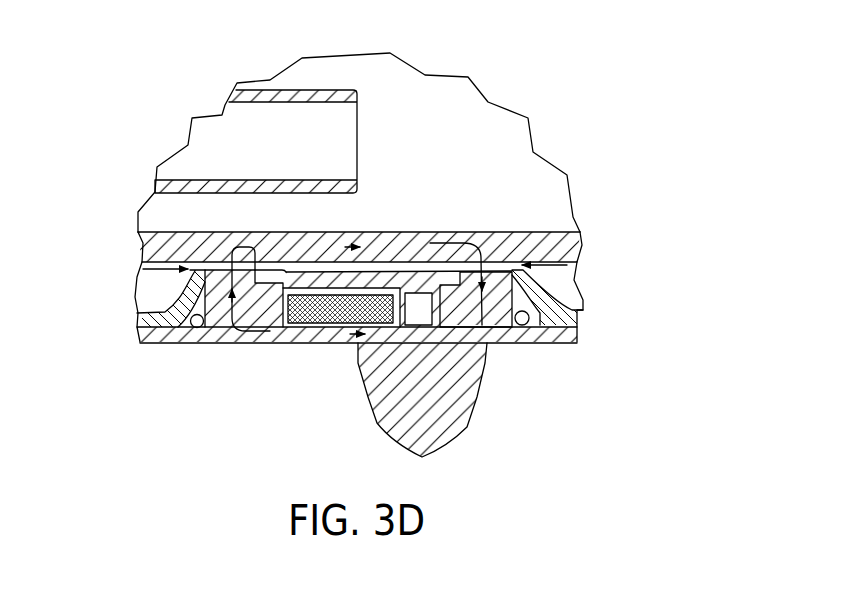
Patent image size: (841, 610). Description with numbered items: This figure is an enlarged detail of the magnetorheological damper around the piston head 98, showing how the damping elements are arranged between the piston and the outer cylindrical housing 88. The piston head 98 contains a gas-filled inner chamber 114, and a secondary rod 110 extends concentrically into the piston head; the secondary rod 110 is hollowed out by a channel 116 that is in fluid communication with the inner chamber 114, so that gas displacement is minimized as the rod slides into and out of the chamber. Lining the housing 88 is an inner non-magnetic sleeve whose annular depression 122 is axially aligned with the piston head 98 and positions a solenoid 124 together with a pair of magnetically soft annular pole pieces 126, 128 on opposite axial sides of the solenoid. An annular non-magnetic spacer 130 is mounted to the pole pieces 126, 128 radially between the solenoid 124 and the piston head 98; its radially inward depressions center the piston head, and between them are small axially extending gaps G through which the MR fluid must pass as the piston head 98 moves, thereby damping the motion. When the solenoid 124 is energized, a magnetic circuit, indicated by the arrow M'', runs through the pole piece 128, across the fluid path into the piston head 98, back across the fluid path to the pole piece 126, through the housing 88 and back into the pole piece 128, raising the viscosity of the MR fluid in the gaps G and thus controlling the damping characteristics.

The secondary rod 110 is at (273, 90).
The gas-filled inner chamber 114 is at (447, 140).
The hollow channel 116 is at (243, 157).
The piston head 98 is at (153, 242).
The axially extending gaps G is at (163, 257).
The annular pole piece 126 is at (228, 312).
The non-magnetic spacer 130 is at (413, 280).
The solenoid 124 is at (318, 323).
The annular pole piece 128 is at (490, 312).
The annular depression 122 is at (525, 292).
The cylindrical housing 88 is at (150, 340).
The magnetic circuit arrow M'' is at (362, 400).